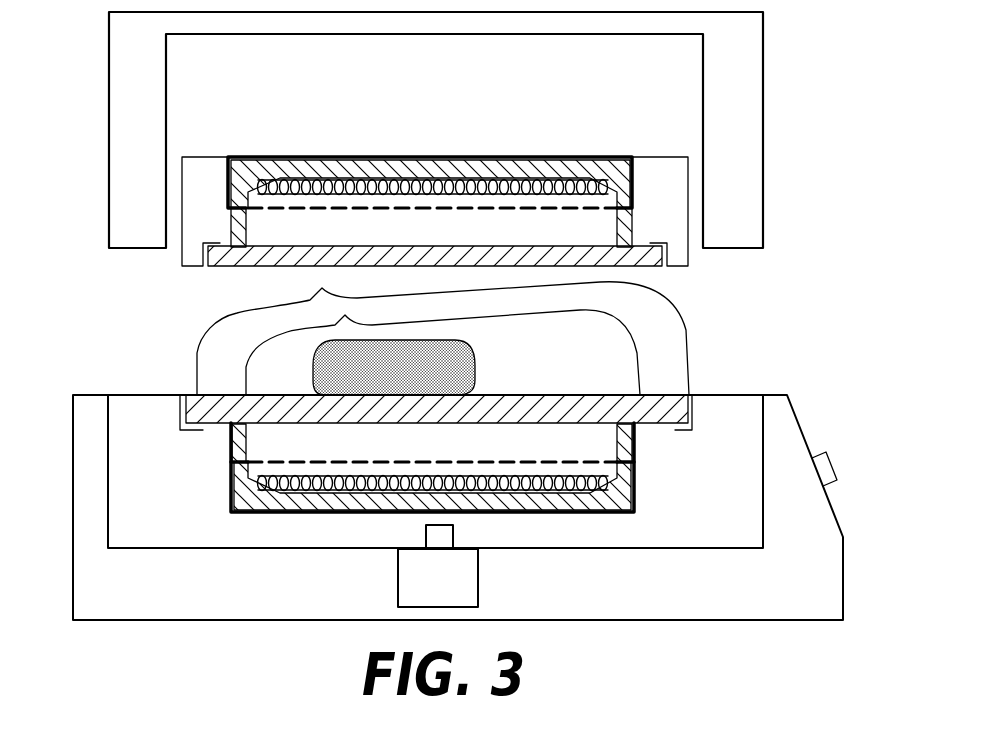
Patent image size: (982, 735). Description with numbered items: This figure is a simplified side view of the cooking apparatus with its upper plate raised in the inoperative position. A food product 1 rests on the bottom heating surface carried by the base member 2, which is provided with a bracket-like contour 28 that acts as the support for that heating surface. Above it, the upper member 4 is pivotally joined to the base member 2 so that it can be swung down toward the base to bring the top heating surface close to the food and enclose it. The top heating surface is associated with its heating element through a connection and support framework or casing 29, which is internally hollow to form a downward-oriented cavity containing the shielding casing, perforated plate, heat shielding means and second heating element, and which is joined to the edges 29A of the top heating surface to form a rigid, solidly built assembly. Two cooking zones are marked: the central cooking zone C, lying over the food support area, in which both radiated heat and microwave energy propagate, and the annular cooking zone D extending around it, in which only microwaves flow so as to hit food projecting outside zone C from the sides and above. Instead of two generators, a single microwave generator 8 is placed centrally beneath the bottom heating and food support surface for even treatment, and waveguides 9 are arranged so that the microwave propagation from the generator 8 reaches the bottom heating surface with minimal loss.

The food product 1 is at (466, 356).
The base member 2 is at (812, 582).
The upper member 4 is at (742, 60).
The single microwave generator 8 is at (453, 590).
The waveguides 9 is at (104, 517).
The bracket-like contour 28 is at (176, 413).
The connection and support framework or casing 29 is at (694, 165).
The edges of the top heating surface 29A is at (652, 255).
The cooking zone C is at (443, 349).
The cooking zone D is at (445, 338).